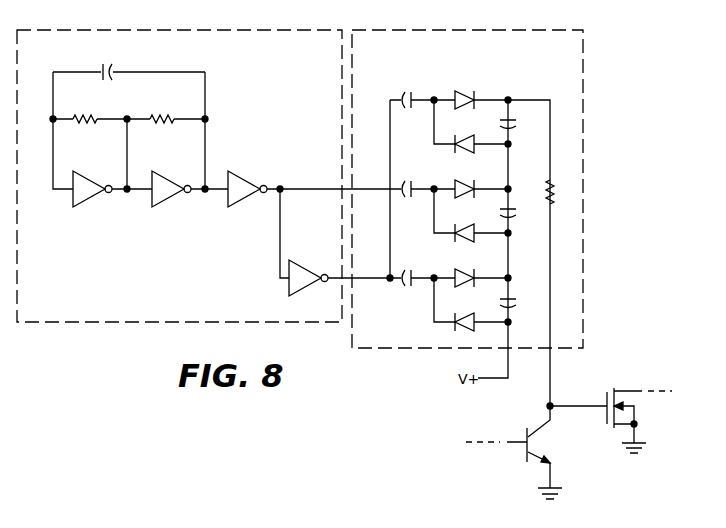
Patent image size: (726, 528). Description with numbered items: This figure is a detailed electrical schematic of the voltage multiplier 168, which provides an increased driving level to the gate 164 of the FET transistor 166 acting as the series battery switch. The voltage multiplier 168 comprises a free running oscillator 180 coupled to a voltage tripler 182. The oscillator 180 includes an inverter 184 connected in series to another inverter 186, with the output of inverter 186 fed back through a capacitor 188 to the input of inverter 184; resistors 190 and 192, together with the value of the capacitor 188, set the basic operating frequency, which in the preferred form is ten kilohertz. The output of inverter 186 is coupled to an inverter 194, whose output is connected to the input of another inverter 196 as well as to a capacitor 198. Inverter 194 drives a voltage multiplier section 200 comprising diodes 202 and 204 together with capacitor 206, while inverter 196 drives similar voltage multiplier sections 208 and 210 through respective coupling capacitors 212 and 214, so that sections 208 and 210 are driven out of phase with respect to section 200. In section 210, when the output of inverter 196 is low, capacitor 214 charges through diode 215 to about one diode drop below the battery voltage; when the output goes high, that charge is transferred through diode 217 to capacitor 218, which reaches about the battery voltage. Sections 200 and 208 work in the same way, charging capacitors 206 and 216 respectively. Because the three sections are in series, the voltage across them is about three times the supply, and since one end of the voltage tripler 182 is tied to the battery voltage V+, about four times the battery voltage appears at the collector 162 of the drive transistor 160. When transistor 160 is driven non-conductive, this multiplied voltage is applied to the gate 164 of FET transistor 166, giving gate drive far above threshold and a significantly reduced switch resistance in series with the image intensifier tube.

The drive transistor 160 is at (524, 452).
The collector 162 is at (536, 426).
The gate 164 is at (585, 392).
The FET transistor 166 is at (615, 414).
The voltage multiplier 168 is at (604, 95).
The free running oscillator 180 is at (325, 65).
The voltage tripler 182 is at (394, 65).
The inverter 184 is at (86, 203).
The inverter 186 is at (165, 203).
The capacitor 188 is at (100, 68).
The resistor 190 is at (96, 112).
The resistor 192 is at (173, 112).
The inverter 194 is at (237, 205).
The inverter 196 is at (303, 264).
The capacitor 198 is at (406, 178).
The voltage multiplier section 200 is at (518, 204).
The diode 202 is at (463, 176).
The diode 204 is at (461, 246).
The capacitor 206 is at (503, 214).
The voltage multiplier section 208 is at (545, 86).
The voltage multiplier section 210 is at (531, 289).
The coupling capacitor 212 is at (400, 92).
The coupling capacitor 214 is at (409, 288).
The diode 215 is at (461, 333).
The capacitor 216 is at (501, 124).
The diode 217 is at (467, 270).
The capacitor 218 is at (501, 304).